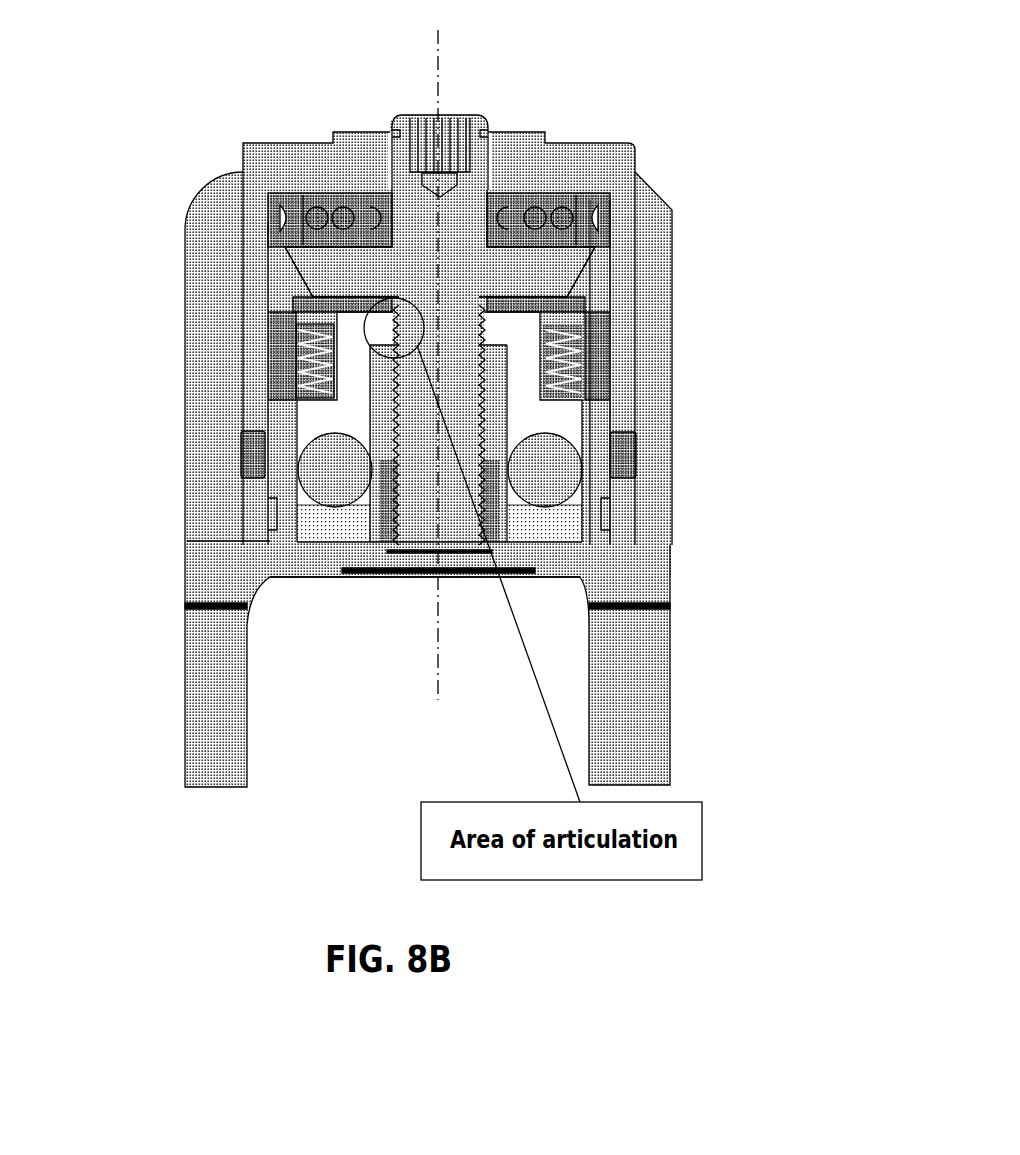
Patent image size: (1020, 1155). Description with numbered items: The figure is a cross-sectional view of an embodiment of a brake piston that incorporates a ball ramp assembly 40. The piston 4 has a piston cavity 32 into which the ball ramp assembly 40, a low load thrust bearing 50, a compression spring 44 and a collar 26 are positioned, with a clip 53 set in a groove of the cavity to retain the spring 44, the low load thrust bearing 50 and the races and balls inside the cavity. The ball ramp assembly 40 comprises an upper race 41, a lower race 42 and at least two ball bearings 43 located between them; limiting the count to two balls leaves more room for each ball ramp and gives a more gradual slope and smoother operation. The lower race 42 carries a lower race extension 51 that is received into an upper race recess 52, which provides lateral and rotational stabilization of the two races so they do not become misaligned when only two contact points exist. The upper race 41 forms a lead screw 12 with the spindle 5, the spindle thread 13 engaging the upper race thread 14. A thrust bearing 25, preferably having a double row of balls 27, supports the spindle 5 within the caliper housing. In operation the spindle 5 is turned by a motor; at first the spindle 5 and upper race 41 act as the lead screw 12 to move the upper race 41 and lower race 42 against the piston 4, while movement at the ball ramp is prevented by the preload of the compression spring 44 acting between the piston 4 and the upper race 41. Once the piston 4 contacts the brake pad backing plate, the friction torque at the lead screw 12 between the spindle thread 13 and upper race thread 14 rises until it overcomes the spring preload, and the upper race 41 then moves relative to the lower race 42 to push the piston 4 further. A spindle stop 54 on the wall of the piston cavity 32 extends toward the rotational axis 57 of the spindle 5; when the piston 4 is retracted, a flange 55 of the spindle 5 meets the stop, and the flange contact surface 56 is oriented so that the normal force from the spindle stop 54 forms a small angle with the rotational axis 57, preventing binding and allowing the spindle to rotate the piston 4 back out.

The piston 4 is at (575, 565).
The spindle 5 is at (468, 213).
The lead screw 12 is at (684, 436).
The spindle thread 13 is at (493, 443).
The upper race thread 14 is at (492, 330).
The thrust bearing 25 is at (248, 210).
The collar 26 is at (567, 200).
The balls 27 is at (327, 200).
The piston cavity 32 is at (310, 300).
The ball ramp assembly 40 is at (263, 460).
The upper race 41 is at (568, 413).
The lower race 42 is at (570, 527).
The ball bearings 43 is at (558, 468).
The compression spring 44 is at (285, 371).
The low load thrust bearing 50 is at (297, 397).
The lower race extension 51 is at (413, 350).
The upper race recess 52 is at (388, 412).
The clip 53 is at (290, 326).
The spindle stop 54 is at (600, 258).
The flange 55 is at (548, 278).
The flange contact surface 56 is at (295, 276).
The rotational axis 57 is at (438, 48).